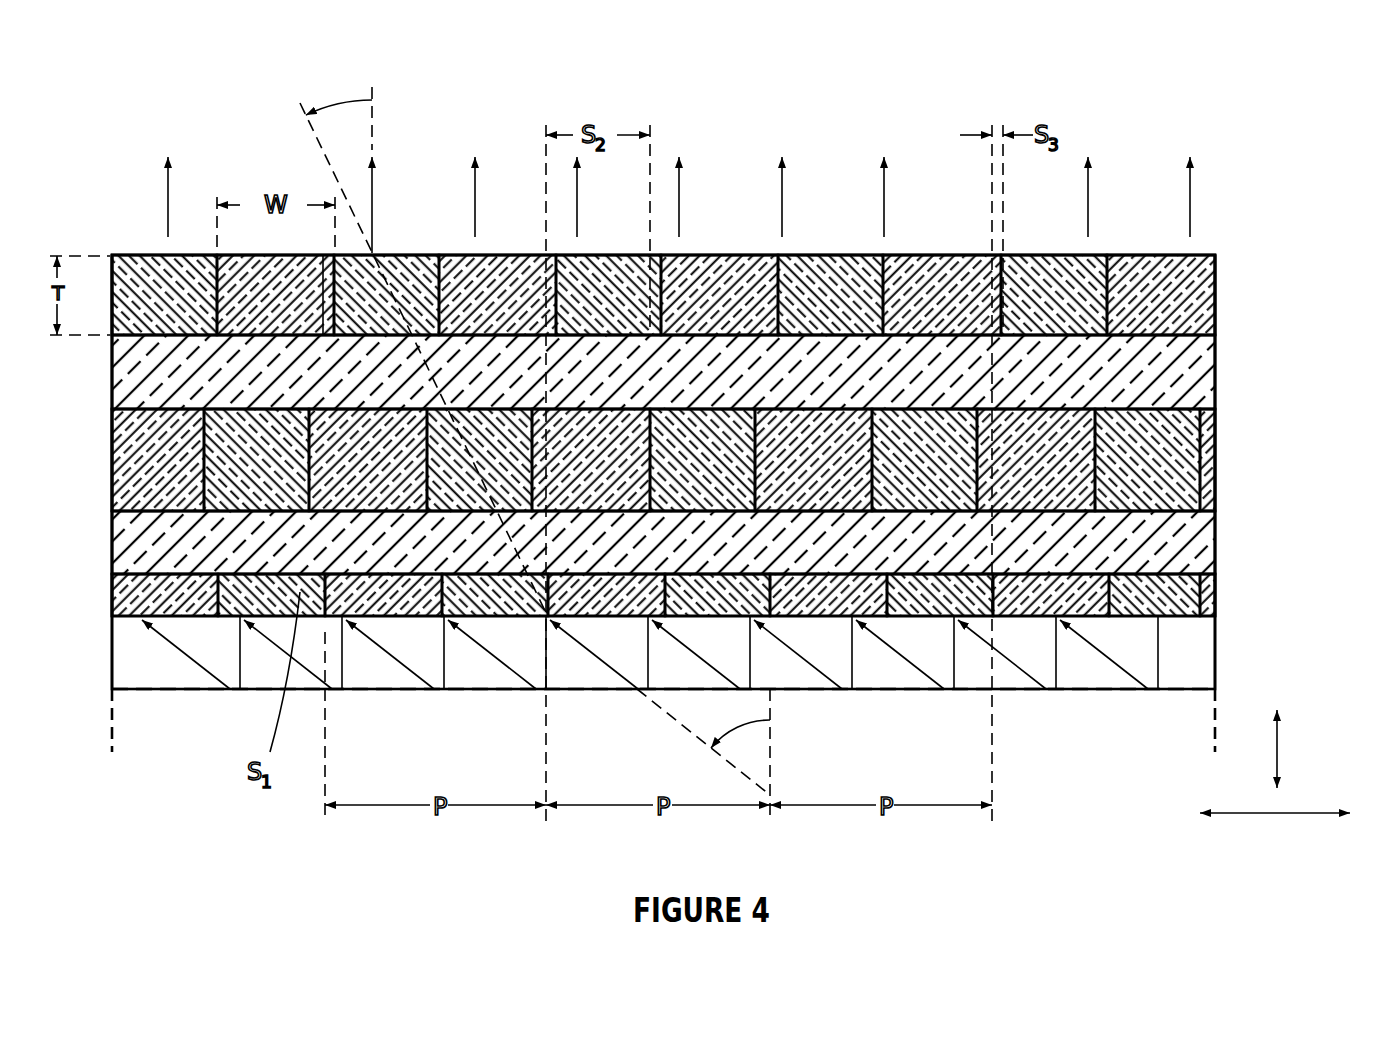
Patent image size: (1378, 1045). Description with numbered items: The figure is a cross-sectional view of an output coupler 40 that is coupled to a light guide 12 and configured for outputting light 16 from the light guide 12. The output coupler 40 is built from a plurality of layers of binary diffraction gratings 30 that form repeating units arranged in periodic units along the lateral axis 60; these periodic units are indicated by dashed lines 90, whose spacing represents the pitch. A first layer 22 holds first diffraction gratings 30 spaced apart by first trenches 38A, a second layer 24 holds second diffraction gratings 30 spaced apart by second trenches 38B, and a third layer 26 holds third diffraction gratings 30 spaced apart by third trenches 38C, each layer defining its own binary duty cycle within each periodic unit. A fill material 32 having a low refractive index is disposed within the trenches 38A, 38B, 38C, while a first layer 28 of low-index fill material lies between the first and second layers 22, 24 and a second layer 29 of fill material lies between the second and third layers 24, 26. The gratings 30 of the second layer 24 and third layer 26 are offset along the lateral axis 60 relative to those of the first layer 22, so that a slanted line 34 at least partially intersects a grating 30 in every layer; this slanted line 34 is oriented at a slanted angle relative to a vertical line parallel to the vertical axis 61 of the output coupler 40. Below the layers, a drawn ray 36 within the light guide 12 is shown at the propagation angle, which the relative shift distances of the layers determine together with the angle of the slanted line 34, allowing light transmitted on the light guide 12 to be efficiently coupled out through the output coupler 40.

The light guide 12 is at (1188, 660).
The light 16 is at (373, 132).
The first layer 22 is at (1190, 593).
The second layer 24 is at (1188, 462).
The third layer 26 is at (1216, 276).
The first layer of fill material 28 is at (1188, 542).
The second layer of fill material 29 is at (1193, 368).
The diffraction gratings 30 is at (152, 283).
The fill material 32 is at (720, 273).
The slanted line 34 is at (498, 412).
The refracted light ray 36 is at (595, 657).
The first trenches 38A is at (147, 588).
The second trenches 38B is at (147, 427).
The third trenches 38C is at (247, 272).
The output coupler 40 is at (175, 142).
The lateral axis 60 is at (1308, 812).
The vertical axis 61 is at (1278, 748).
The dashed lines 90 is at (327, 725).